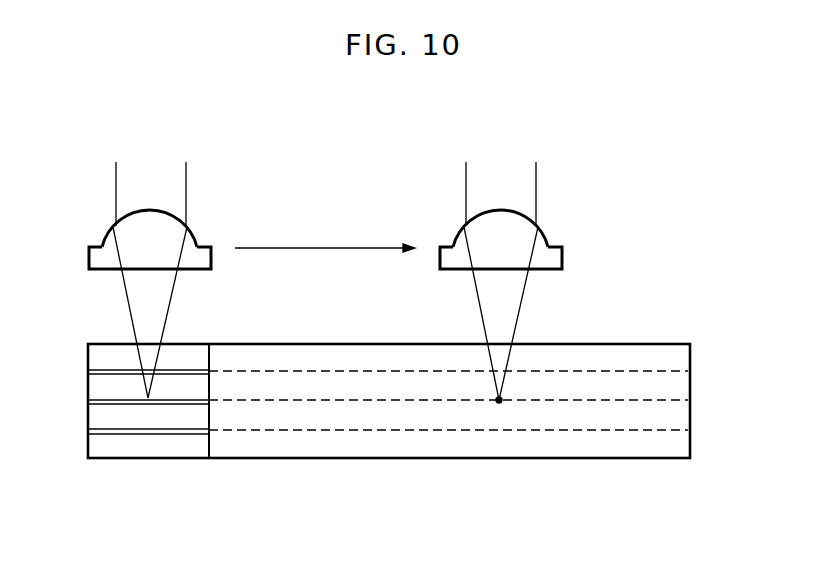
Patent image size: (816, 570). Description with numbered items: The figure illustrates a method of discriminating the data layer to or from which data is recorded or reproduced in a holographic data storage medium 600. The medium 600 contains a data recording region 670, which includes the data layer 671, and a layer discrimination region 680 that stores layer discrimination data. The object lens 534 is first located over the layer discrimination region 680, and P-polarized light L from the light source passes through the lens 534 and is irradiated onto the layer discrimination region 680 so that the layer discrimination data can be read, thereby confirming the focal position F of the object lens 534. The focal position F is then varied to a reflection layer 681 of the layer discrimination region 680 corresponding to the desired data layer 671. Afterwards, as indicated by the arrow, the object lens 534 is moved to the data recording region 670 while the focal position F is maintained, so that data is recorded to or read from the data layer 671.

The holographic data storage medium 600 is at (692, 336).
The object lens 534 is at (211, 268).
The data recording region 670 is at (211, 507).
The data layer 671 is at (470, 400).
The layer discrimination region 680 is at (87, 507).
The reflection layer 681 is at (105, 404).
The P-polarized light L is at (116, 193).
The focal position F is at (500, 404).